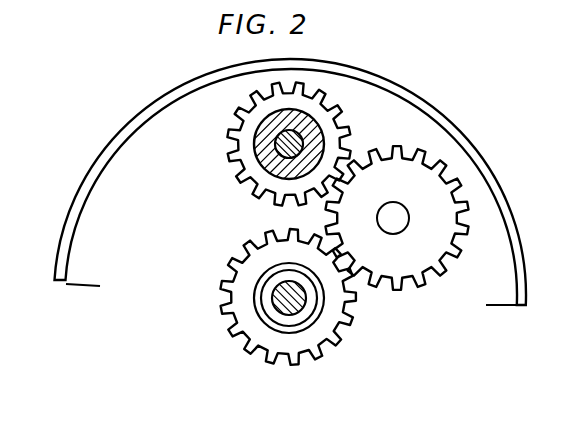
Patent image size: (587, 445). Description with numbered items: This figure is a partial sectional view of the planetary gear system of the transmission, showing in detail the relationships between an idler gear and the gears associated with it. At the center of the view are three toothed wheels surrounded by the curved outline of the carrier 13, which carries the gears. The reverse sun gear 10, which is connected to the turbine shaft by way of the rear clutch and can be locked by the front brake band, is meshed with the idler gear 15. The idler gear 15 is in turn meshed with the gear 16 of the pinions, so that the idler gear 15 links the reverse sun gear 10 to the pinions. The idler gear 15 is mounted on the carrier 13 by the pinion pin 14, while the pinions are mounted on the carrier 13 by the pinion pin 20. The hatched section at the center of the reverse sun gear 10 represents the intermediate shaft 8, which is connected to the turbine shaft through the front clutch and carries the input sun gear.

The intermediate shaft 8 is at (298, 310).
The reverse sun gear 10 is at (348, 322).
The carrier 13 is at (148, 112).
The pinion pin 14 is at (398, 217).
The idler gear 15 is at (412, 272).
The gear of the pinions 16 is at (240, 175).
The pinion pin 20 is at (276, 147).